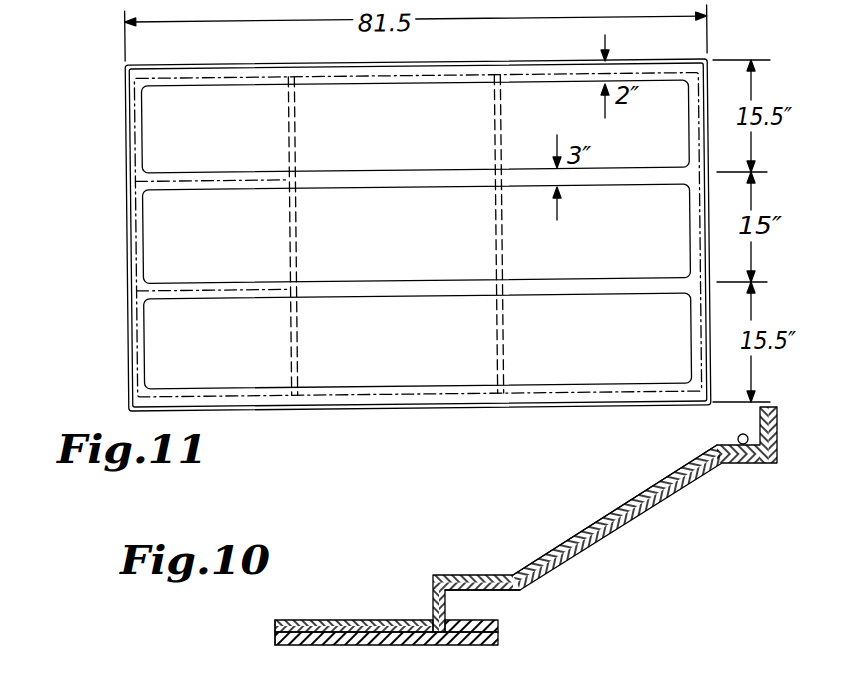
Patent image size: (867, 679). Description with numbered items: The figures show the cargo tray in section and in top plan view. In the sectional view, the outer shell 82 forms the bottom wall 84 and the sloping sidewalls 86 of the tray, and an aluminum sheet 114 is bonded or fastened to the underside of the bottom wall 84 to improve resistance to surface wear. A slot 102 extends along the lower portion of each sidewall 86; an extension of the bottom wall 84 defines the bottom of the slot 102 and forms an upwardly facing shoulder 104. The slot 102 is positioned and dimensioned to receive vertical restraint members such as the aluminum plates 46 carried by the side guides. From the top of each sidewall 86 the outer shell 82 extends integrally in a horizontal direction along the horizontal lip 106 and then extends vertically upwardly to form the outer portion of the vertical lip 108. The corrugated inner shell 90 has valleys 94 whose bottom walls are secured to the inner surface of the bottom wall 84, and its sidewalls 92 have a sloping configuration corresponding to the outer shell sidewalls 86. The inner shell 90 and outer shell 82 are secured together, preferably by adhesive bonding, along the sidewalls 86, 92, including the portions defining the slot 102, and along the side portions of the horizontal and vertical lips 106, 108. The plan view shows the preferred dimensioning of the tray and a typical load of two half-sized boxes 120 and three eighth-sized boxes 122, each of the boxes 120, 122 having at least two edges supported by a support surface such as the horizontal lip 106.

In FIG. 11, the eighth-sized boxes 122 is at (136, 127).
In FIG. 11, the half-sized boxes 120 is at (358, 397).
In FIG. 10, the outer shell 82 is at (618, 519).
In FIG. 10, the bottom wall 84 is at (354, 600).
In FIG. 10, the sloping sidewalls 86 is at (657, 490).
In FIG. 10, the inner shell 90 is at (505, 553).
In FIG. 10, the sidewalls of the inner shell 92 is at (580, 531).
In FIG. 10, the valleys 94 is at (352, 620).
In FIG. 10, the slot 102 is at (480, 603).
In FIG. 10, the upwardly facing shoulder 104 is at (494, 617).
In FIG. 10, the horizontal lip 106 is at (743, 463).
In FIG. 10, the vertical lip 108 is at (777, 432).
In FIG. 10, the aluminum sheet 114 is at (425, 646).
In FIG. 10, the aluminum plates 46 is at (303, 649).